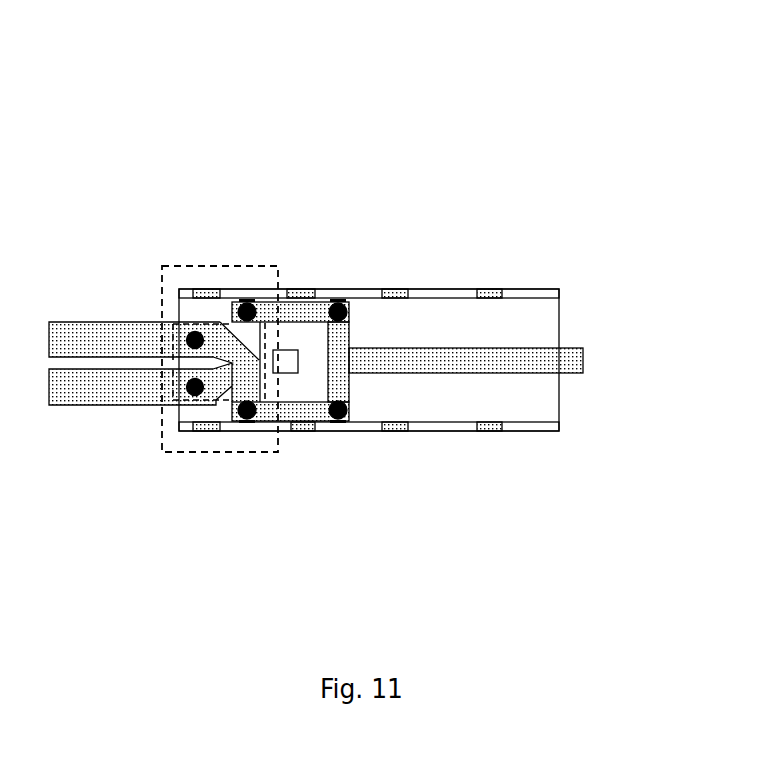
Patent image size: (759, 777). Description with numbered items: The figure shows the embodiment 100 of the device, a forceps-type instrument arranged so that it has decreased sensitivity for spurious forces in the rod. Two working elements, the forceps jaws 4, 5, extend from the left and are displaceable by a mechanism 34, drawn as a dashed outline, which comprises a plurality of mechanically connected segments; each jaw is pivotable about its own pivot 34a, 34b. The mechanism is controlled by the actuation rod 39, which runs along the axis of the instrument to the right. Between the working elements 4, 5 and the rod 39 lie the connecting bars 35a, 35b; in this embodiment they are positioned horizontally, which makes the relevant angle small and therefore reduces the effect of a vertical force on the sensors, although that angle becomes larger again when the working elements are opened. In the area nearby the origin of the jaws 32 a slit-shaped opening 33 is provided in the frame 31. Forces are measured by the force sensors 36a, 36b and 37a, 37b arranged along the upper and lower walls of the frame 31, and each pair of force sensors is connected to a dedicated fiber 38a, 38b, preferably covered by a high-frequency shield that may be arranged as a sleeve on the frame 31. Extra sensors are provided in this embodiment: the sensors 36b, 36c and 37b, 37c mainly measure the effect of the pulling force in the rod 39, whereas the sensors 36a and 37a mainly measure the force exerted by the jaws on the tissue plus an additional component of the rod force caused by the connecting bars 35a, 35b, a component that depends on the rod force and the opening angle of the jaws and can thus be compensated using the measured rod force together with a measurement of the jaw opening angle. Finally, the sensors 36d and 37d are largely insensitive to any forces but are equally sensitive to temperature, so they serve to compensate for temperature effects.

The embodiment 100 is at (267, 124).
The forceps jaw 4 is at (94, 340).
The forceps jaw 5 is at (92, 387).
The frame 31 is at (478, 333).
The origin of the jaws 32 is at (172, 340).
The slit-shaped opening 33 is at (275, 355).
The mechanism 34 is at (198, 265).
The pivot 34a is at (196, 331).
The pivot 34b is at (196, 396).
The connecting bar 35a is at (292, 307).
The connecting bar 35b is at (289, 407).
The force sensor 36a is at (307, 290).
The force sensor 36b is at (400, 288).
The force sensor 36c is at (490, 288).
The sensor 36d is at (207, 290).
The force sensor 37a is at (303, 432).
The force sensor 37b is at (402, 432).
The force sensor 37c is at (490, 432).
The sensor 37d is at (210, 432).
The fiber 38a is at (559, 290).
The fiber 38b is at (559, 427).
The actuation rod 39 is at (583, 359).